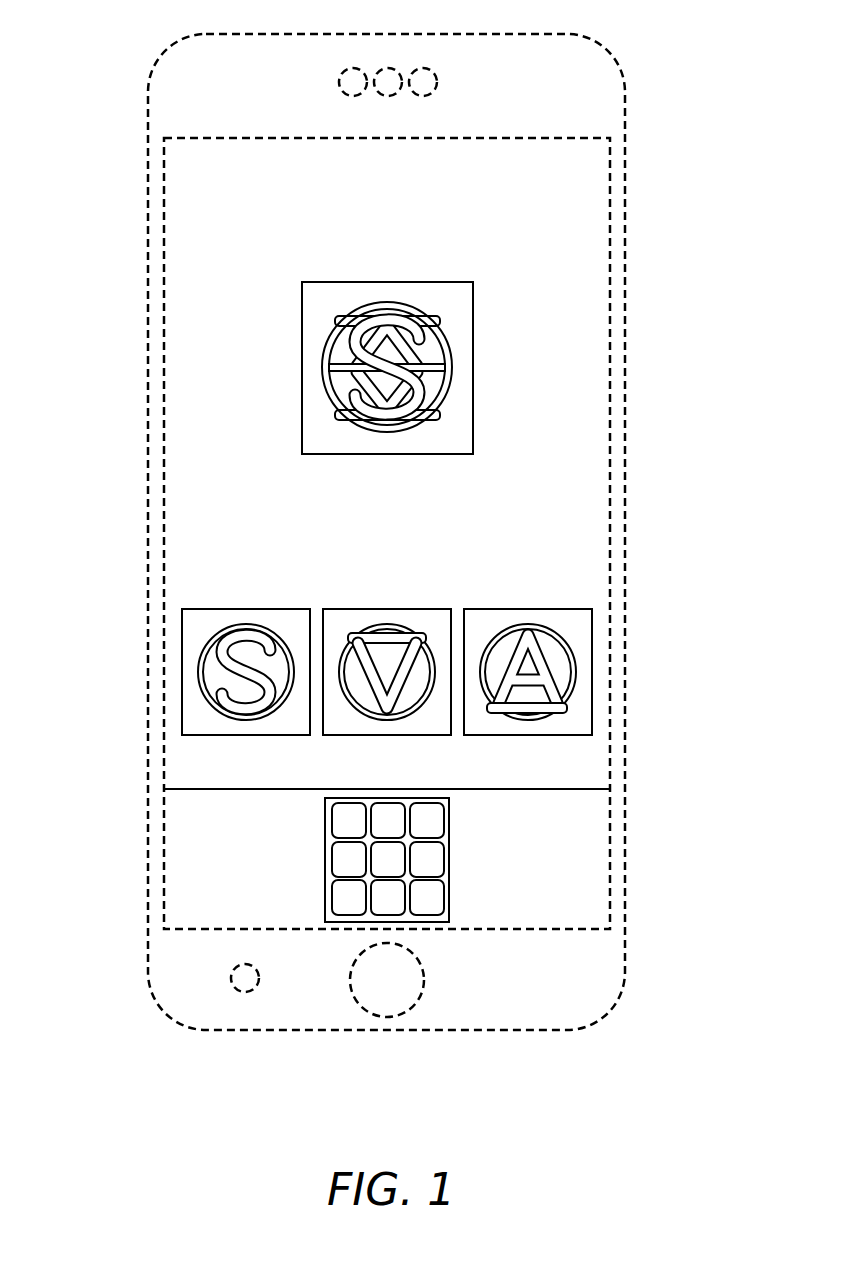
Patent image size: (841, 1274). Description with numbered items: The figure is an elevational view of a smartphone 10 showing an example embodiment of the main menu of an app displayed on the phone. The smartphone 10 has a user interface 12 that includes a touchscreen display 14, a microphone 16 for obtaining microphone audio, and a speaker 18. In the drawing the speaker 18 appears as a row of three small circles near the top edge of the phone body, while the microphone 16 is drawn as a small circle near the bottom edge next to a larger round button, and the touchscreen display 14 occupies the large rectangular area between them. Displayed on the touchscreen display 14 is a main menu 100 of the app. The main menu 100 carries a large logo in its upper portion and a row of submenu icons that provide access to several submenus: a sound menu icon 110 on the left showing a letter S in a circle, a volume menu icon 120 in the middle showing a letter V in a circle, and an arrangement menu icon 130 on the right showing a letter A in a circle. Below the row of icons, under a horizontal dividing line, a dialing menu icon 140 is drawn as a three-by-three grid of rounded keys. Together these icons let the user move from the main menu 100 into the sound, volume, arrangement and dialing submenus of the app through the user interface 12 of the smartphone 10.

The smartphone 10 is at (146, 927).
The user interface 12 is at (416, 1003).
The touchscreen display 14 is at (610, 750).
The microphone 16 is at (241, 992).
The speaker 18 is at (428, 68).
The main menu 100 is at (384, 602).
The sound menu icon 110 is at (182, 648).
The volume menu icon 120 is at (425, 607).
The arrangement menu icon 130 is at (592, 643).
The dialing menu icon 140 is at (449, 868).